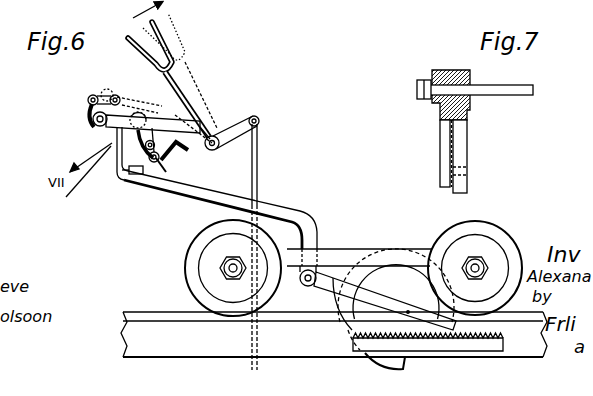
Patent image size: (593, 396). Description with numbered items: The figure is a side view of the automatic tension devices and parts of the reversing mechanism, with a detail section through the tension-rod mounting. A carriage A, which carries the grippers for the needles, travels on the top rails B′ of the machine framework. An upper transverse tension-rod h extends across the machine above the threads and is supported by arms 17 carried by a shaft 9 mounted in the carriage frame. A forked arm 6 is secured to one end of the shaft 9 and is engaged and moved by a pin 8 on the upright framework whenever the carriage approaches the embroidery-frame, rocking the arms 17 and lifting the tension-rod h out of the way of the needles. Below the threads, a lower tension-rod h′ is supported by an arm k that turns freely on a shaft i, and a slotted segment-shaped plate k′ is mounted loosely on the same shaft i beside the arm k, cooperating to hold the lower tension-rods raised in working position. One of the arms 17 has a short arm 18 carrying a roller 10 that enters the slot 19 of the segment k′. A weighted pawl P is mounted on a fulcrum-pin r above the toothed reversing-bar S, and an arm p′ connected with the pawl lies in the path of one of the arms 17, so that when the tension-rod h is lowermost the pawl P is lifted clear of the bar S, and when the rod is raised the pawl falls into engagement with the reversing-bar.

In FIG. 6, the forked arm 6 is at (184, 79).
In FIG. 6, the pin 8 is at (135, 20).
In FIG. 6, the shaft or spindle 9 is at (211, 150).
In FIG. 6, the roller 10 is at (157, 162).
In FIG. 6, the arms 17 is at (160, 112).
In FIG. 6, the short arm 18 is at (159, 122).
In FIG. 6, the slot 19 is at (77, 180).
In FIG. 6, the arm k is at (91, 112).
In FIG. 7, the arm k is at (458, 69).
In FIG. 6, the slotted segment-shaped plate k′ is at (174, 158).
In FIG. 7, the slotted segment-shaped plate k′ is at (445, 143).
In FIG. 6, the transverse rod h is at (99, 153).
In FIG. 6, the transverse tension-rod h′ is at (94, 95).
In FIG. 6, the shaft i is at (158, 117).
In FIG. 7, the shaft i is at (475, 84).
In FIG. 6, the arm p′ is at (272, 207).
In FIG. 6, the carriage A is at (359, 241).
In FIG. 6, the fulcrum-pin r is at (308, 288).
In FIG. 6, the pawl or contact-arm P is at (389, 300).
In FIG. 6, the top rails B′ is at (334, 334).
In FIG. 6, the reversing-bar S is at (505, 335).